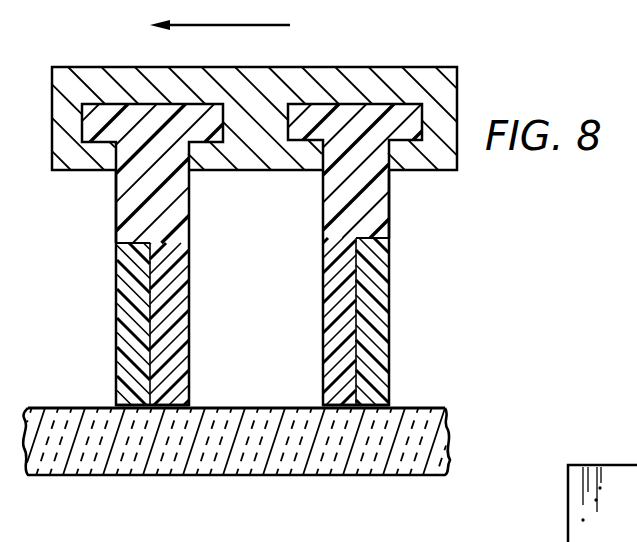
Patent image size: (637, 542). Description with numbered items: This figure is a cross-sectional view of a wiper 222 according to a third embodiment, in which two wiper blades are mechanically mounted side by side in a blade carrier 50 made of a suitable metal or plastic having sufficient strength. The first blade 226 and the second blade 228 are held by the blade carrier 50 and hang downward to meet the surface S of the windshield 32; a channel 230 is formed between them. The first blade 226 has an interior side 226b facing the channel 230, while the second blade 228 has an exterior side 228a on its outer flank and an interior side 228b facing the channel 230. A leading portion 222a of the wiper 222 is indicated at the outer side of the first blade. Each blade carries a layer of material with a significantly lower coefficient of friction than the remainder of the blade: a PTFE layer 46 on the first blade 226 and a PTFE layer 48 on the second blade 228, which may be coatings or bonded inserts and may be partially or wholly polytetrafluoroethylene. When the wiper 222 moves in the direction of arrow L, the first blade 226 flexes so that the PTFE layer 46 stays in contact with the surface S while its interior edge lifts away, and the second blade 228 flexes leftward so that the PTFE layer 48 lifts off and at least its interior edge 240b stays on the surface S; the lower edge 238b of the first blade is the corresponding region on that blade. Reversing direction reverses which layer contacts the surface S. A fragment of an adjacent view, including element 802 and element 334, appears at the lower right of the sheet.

The blade carrier 50 is at (264, 103).
The arrow indicating direction of wiper movement L is at (290, 25).
The wiper 222 is at (148, 312).
The leading edge of conductor structure 222a is at (115, 227).
The first blade 226 is at (149, 312).
The interior side of first blade 226b is at (277, 331).
The second blade 228 is at (369, 315).
The exterior side of second blade 228a is at (505, 253).
The interior side of second blade 228b is at (320, 293).
The channel 230 is at (280, 280).
The PTFE layer 46 is at (125, 306).
The PTFE layer 48 is at (376, 320).
The windshield 32 is at (236, 438).
The surface of windshield S is at (405, 407).
The bottom edge of first conductor 238b is at (194, 408).
The interior edge of second blade 240b is at (325, 407).
The element of adjacent figure 802 is at (608, 465).
The element of adjacent figure 334 is at (532, 538).